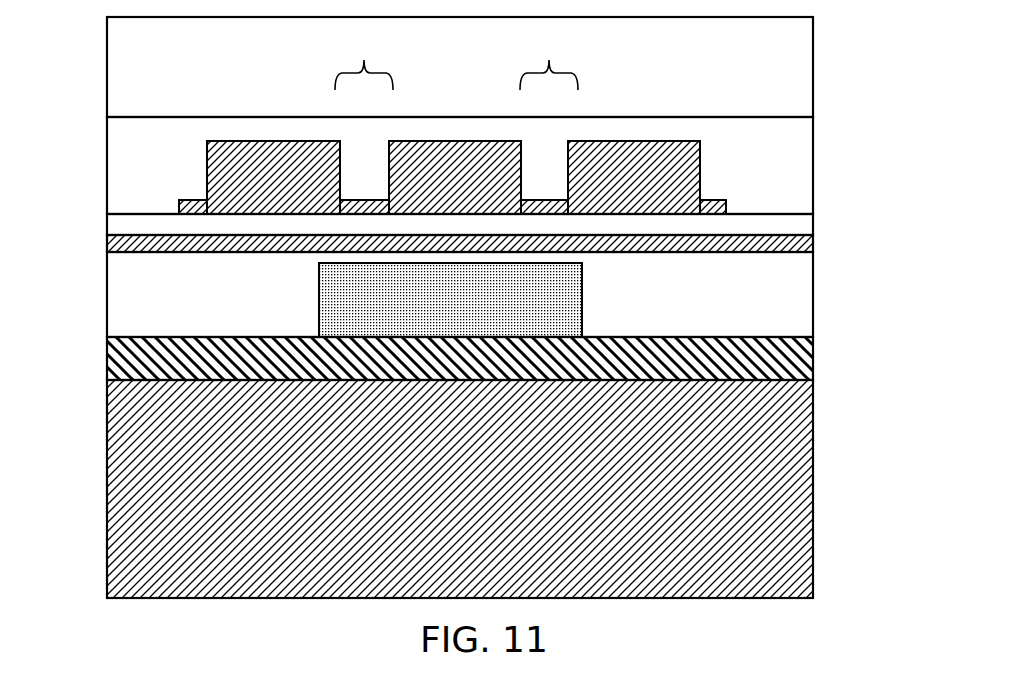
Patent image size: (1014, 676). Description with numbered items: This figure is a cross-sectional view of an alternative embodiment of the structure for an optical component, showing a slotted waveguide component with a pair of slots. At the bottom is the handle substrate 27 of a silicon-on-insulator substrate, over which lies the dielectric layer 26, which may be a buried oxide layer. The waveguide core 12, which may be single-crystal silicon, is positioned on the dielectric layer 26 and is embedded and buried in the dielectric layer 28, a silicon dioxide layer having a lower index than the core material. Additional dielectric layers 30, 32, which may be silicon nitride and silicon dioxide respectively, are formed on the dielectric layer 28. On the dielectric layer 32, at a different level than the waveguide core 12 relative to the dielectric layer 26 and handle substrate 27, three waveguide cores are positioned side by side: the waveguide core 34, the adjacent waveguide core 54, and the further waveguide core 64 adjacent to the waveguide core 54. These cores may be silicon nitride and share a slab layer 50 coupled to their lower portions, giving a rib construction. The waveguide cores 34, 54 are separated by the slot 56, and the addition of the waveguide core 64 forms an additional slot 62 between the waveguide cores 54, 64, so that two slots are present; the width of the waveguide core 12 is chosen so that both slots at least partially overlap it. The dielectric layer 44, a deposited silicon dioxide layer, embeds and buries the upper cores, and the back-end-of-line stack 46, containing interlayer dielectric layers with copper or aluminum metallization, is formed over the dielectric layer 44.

The waveguide core 12 is at (360, 287).
The dielectric layer 26 is at (767, 358).
The handle substrate 27 is at (140, 508).
The dielectric layer 28 is at (128, 285).
The dielectric layer 30 is at (793, 245).
The dielectric layer 32 is at (130, 227).
The waveguide core 34 is at (660, 176).
The dielectric layer 44 is at (130, 144).
The back-end-of-line stack 46 is at (767, 70).
The slab layer 50 is at (193, 203).
The waveguide core 54 is at (440, 178).
The slot 56 is at (549, 58).
The slot 62 is at (364, 58).
The waveguide core 64 is at (255, 175).